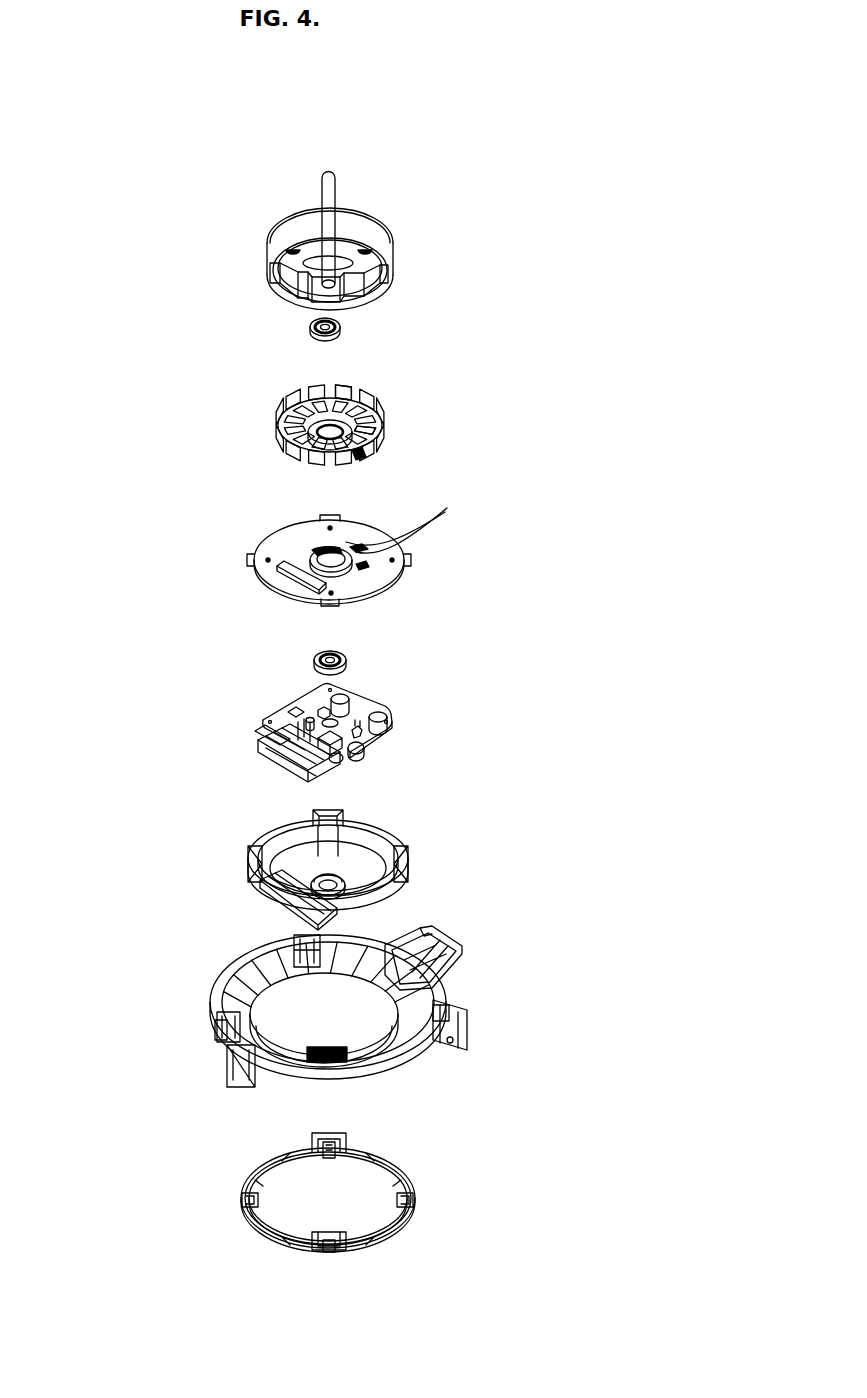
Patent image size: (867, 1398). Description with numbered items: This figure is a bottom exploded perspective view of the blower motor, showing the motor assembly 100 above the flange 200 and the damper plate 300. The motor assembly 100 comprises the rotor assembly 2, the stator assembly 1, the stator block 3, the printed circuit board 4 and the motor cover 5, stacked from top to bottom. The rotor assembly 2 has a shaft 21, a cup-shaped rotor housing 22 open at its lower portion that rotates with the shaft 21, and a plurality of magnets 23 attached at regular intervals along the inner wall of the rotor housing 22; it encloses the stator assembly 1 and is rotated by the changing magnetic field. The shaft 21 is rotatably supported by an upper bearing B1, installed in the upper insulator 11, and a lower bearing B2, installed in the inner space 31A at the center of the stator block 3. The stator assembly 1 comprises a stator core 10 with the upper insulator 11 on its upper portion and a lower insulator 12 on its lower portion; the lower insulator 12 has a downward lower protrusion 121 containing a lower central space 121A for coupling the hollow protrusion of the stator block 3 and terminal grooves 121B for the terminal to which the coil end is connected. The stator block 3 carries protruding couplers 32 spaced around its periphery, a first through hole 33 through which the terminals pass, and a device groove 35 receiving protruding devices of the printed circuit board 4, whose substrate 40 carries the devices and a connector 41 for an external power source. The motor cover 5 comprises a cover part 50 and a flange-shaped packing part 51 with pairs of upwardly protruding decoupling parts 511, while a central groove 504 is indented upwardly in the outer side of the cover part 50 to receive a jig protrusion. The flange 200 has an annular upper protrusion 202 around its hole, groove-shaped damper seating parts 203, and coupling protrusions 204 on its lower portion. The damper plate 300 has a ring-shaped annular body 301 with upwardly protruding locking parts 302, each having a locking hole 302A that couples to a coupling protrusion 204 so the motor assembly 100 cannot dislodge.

The motor assembly 100 is at (110, 213).
The rotor assembly 2 is at (256, 262).
The shaft 21 is at (333, 192).
The rotor housing 22 is at (370, 238).
The magnets 23 is at (355, 285).
The upper bearing B1 is at (310, 327).
The stator assembly 1 is at (262, 428).
The stator core 10 is at (383, 415).
The upper insulator 11 is at (340, 392).
The lower protrusion 121 is at (380, 431).
The lower insulator 12 is at (380, 442).
The lower central space 121A is at (327, 447).
The terminal grooves 121B is at (362, 455).
The stator block 3 is at (258, 548).
The inner space 31A is at (336, 562).
The protruding coupler 32 is at (340, 520).
The first through hole 33 is at (407, 520).
The device groove 35 is at (300, 578).
The lower bearing B2 is at (312, 660).
The printed circuit board 4 is at (256, 720).
The substrate 40 is at (370, 692).
The connector 41 is at (265, 755).
The motor cover 5 is at (256, 868).
The cover part 50 is at (365, 845).
The packing part 51 is at (275, 836).
The decoupling parts 511 is at (340, 820).
The central groove 504 is at (340, 885).
The flange 200 is at (212, 960).
The upper protrusion 202 is at (447, 938).
The damper seating part 203 is at (226, 1005).
The coupling protrusion 204 is at (340, 945).
The damper plate 300 is at (222, 1192).
The annular body 301 is at (380, 1160).
The locking parts 302 is at (345, 1138).
The locking hole 302A is at (320, 1138).